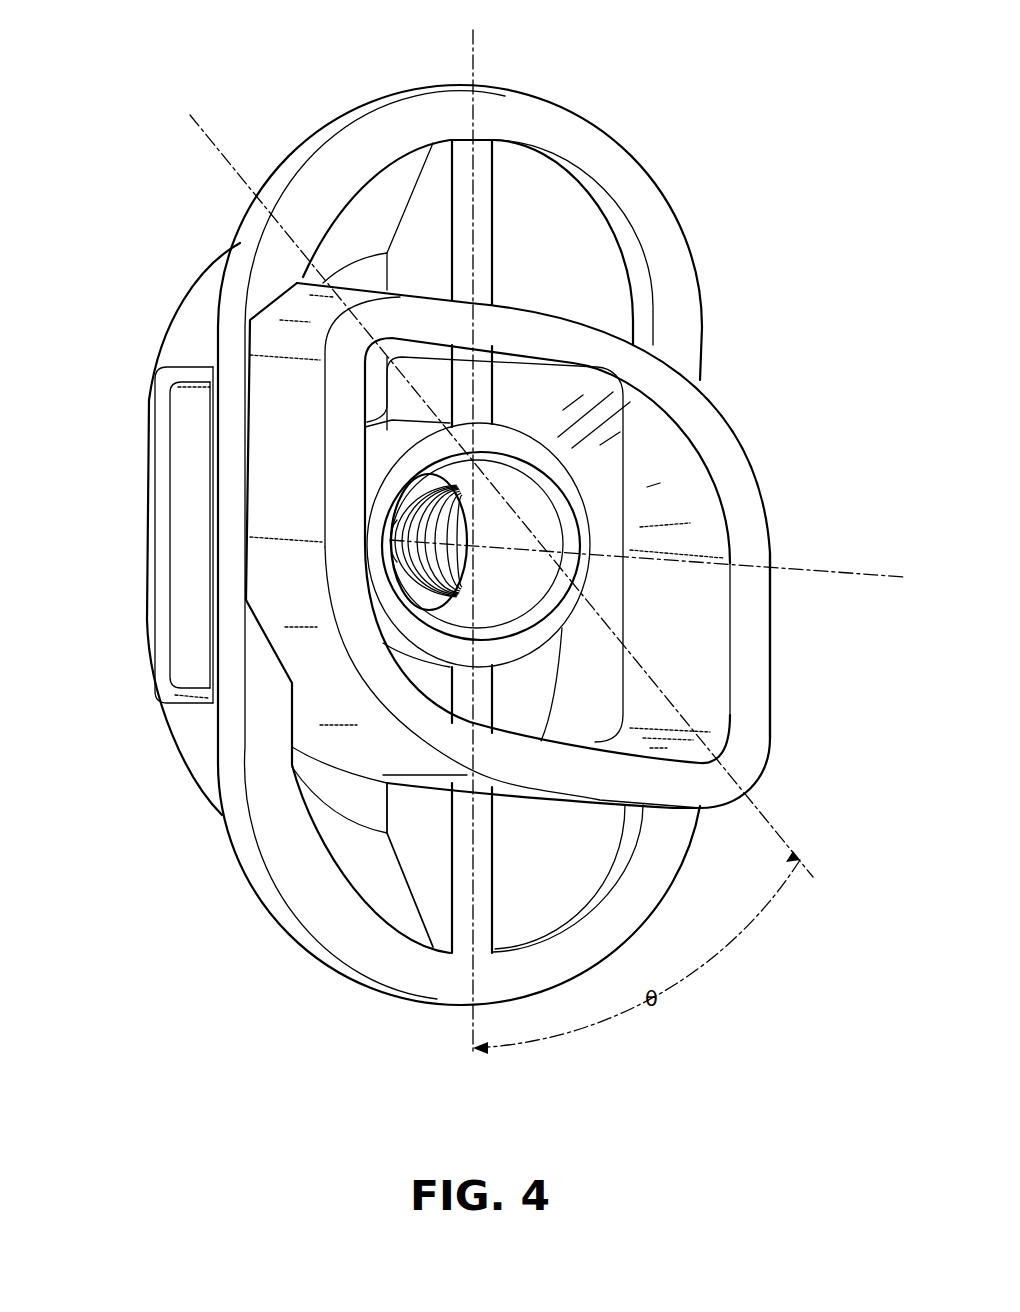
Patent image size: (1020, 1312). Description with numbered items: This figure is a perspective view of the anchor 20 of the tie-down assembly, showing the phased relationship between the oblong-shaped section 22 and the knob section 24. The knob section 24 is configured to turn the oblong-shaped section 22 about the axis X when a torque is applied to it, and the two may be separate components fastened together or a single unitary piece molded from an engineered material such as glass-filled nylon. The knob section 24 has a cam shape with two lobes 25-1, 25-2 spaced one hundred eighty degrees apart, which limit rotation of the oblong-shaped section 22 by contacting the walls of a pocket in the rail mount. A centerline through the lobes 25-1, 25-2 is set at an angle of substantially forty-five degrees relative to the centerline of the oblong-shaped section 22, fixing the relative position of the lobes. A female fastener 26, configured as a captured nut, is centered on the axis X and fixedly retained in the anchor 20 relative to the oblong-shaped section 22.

The anchor 20 is at (207, 848).
The oblong-shaped section 22 is at (440, 978).
The knob section 24 is at (744, 510).
The lobe 25-1 is at (748, 764).
The lobe 25-2 is at (343, 350).
The female fastener 26 is at (175, 604).